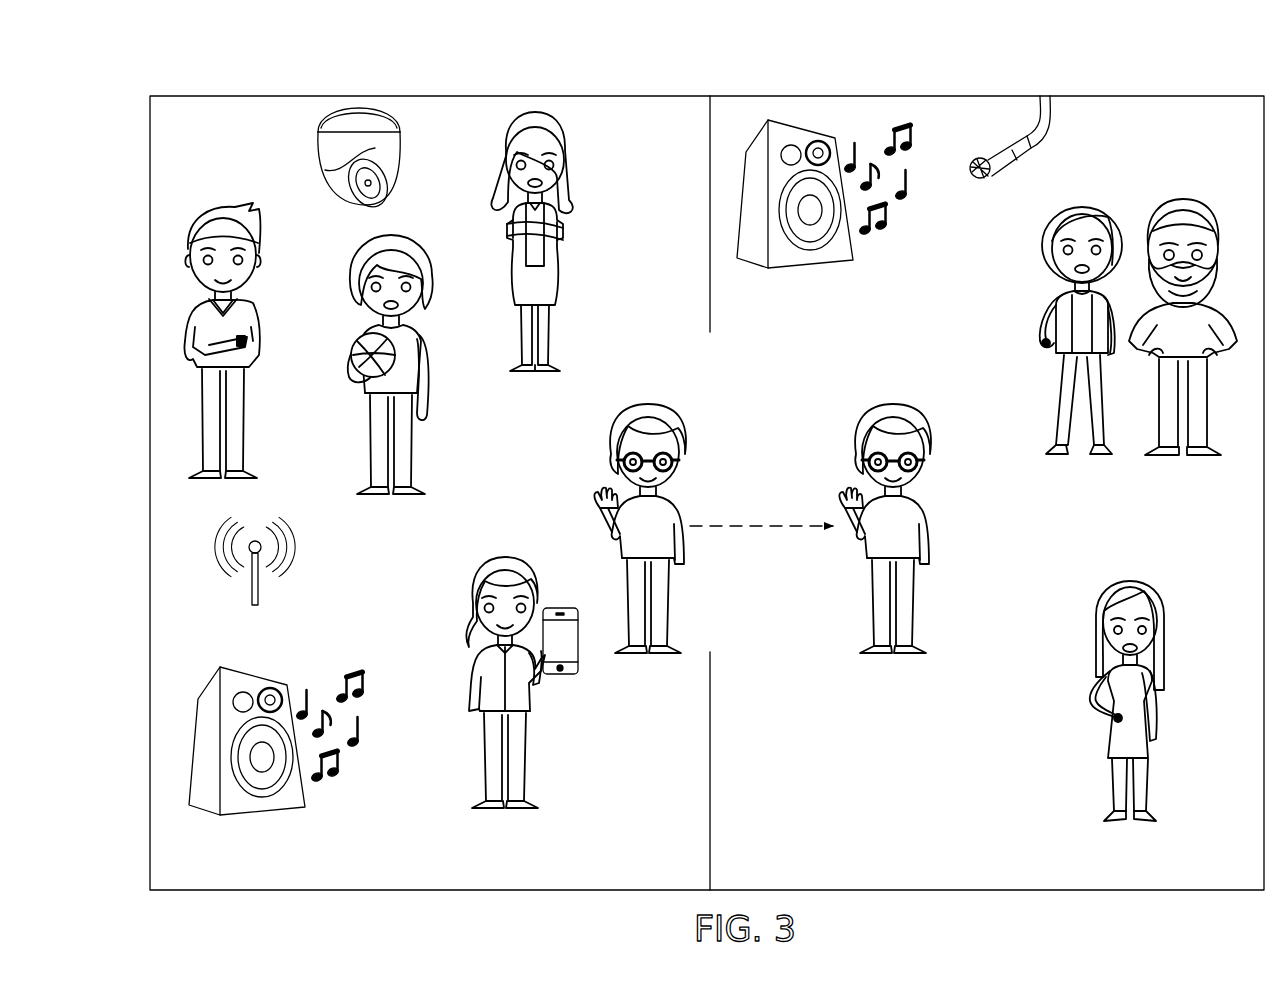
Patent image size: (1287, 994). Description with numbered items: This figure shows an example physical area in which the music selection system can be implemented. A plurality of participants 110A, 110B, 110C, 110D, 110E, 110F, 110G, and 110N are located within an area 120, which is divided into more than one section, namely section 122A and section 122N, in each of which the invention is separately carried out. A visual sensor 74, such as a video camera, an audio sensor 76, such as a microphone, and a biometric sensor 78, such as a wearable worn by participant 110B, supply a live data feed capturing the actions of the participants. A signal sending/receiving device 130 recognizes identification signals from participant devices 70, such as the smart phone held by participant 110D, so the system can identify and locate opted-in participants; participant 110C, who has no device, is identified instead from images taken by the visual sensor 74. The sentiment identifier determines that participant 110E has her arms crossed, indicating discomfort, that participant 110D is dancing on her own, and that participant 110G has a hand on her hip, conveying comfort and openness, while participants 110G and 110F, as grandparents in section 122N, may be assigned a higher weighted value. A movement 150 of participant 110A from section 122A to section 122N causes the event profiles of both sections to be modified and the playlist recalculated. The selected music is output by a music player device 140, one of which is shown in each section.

The area 120 is at (694, 459).
The section 122A is at (658, 484).
The section 122N is at (995, 801).
The visual sensor 74 is at (310, 157).
The audio sensor 76 is at (999, 186).
The biometric sensor 78 is at (276, 319).
The participant device 70 is at (583, 684).
The first participant 110A is at (783, 477).
The participant 110B is at (207, 298).
The participant 110C is at (417, 323).
The participant 110D is at (492, 642).
The participant 110E is at (583, 241).
The participant 110F is at (1196, 284).
The participant 110G is at (1105, 283).
The second participant 110N is at (1081, 673).
The signal sending/receiving device 130 is at (283, 515).
The music player device 140 is at (537, 467).
The movement 150 is at (761, 500).